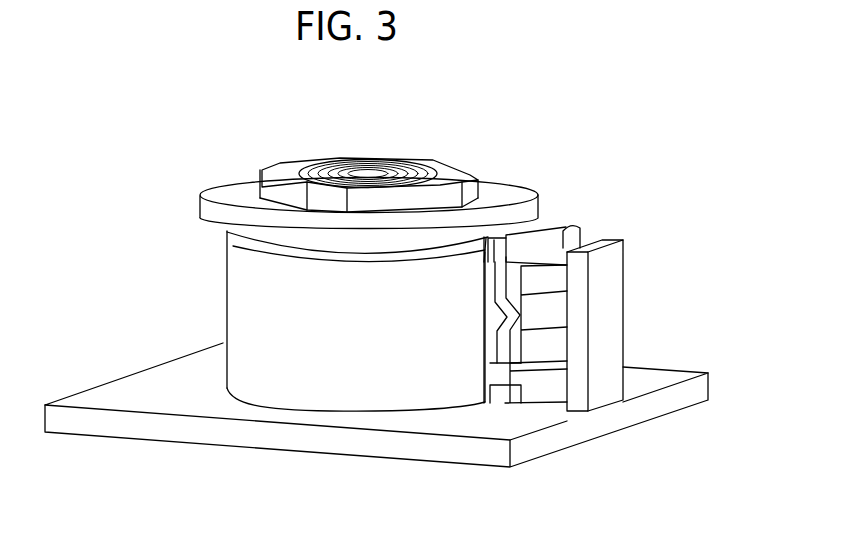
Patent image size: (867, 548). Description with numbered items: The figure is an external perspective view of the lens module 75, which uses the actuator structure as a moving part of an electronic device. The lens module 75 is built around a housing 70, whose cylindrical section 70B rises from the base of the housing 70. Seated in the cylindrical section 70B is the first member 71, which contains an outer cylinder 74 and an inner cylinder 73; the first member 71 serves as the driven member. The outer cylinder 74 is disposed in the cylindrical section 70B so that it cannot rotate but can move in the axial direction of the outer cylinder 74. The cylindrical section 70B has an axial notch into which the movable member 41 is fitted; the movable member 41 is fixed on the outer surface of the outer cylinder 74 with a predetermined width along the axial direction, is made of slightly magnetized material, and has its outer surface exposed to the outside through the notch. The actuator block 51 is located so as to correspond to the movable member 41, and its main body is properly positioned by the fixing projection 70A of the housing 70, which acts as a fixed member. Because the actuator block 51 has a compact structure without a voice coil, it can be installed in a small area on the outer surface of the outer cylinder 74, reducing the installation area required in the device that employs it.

The housing 70 is at (162, 390).
The fixing projection 70A is at (605, 357).
The cylindrical section 70B is at (240, 292).
The first member 71 is at (280, 97).
The inner cylinder 73 is at (280, 168).
The outer cylinder 74 is at (230, 190).
The lens module 75 is at (575, 185).
The movable member 41 is at (492, 337).
The actuator block 51 is at (538, 327).